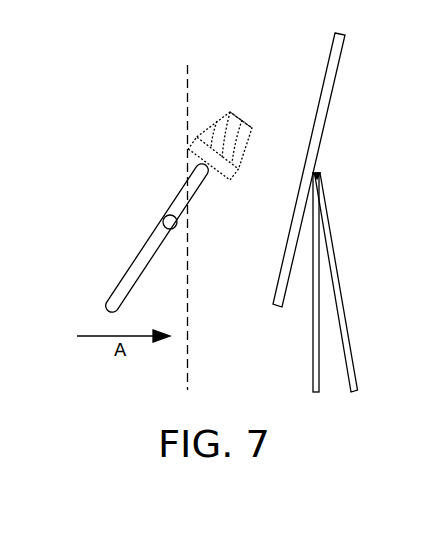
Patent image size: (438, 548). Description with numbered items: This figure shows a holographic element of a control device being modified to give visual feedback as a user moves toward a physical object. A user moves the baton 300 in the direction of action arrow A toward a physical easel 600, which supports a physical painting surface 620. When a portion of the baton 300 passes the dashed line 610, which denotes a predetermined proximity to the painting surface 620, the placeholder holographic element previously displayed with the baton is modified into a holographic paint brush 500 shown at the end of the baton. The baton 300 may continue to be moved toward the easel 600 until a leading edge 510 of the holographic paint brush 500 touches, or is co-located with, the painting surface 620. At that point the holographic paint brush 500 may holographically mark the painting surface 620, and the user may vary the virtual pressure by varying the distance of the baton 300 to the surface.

The baton 300 is at (127, 273).
The holographic paint brush 500 is at (237, 117).
The leading edge 510 is at (253, 128).
The easel 600 is at (338, 277).
The dashed line 610 is at (187, 101).
The painting surface 620 is at (331, 55).